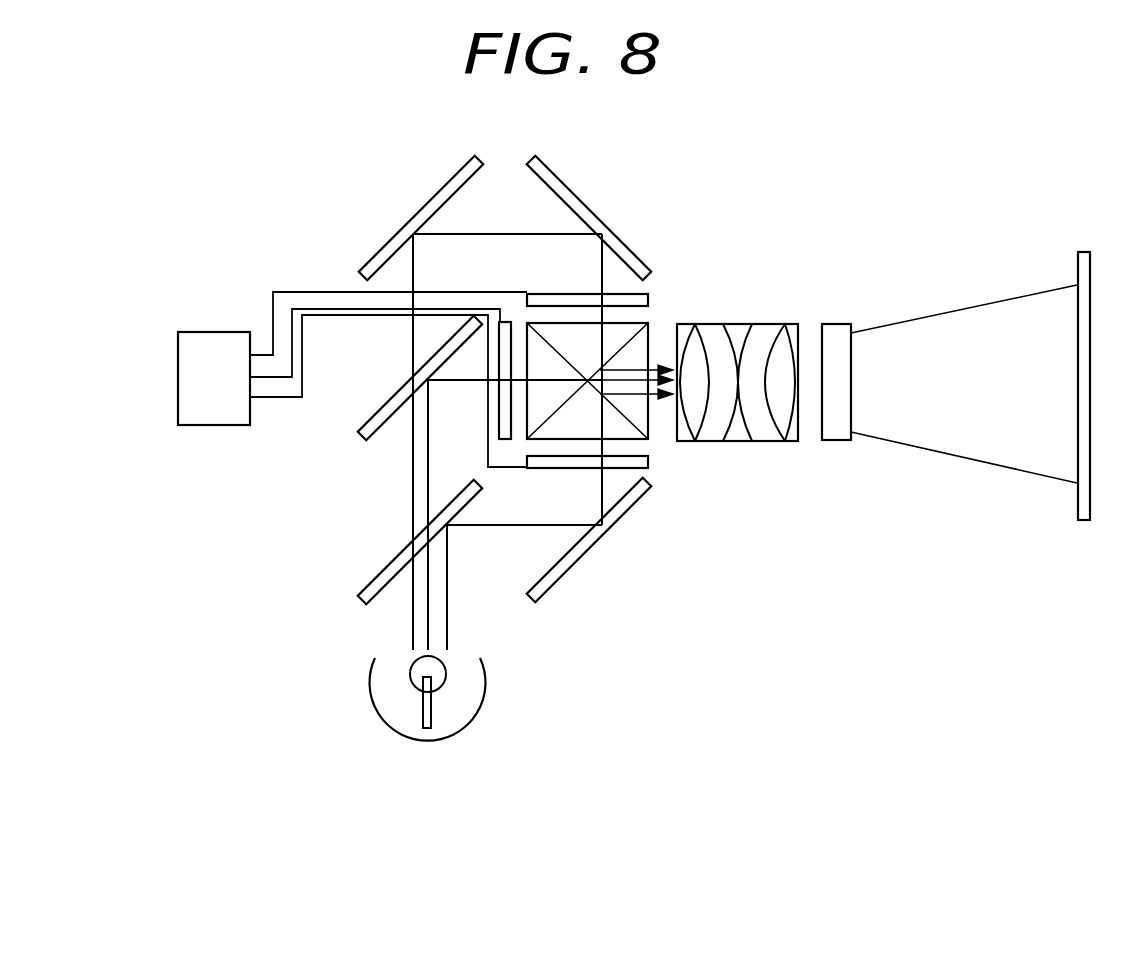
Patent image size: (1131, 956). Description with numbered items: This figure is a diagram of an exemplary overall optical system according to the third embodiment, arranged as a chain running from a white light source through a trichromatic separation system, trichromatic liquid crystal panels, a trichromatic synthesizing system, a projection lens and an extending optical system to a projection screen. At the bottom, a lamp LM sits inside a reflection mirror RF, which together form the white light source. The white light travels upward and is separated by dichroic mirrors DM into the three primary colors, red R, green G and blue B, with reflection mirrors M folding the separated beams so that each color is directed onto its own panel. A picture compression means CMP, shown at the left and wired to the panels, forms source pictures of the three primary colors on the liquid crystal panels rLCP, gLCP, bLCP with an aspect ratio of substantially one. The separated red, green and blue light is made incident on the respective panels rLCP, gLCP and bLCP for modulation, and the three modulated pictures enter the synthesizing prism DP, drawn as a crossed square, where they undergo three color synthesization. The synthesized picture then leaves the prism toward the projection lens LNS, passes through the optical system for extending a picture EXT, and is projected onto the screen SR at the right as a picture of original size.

The picture compression means CMP is at (212, 332).
The reflection mirrors M is at (420, 208).
The dichroic mirrors DM is at (367, 436).
The red primary color R is at (507, 234).
The green primary color G is at (487, 415).
The blue primary color B is at (497, 528).
The red liquid crystal panel rLCP is at (557, 292).
The green liquid crystal panel gLCP is at (503, 440).
The blue liquid crystal panel bLCP is at (648, 460).
The synthesizing prism DP is at (648, 338).
The projection lens LNS is at (710, 323).
The optical system for extending a picture EXT is at (838, 324).
The screen SR is at (1087, 252).
The lamp LM is at (410, 680).
The reflection mirror RF is at (477, 697).